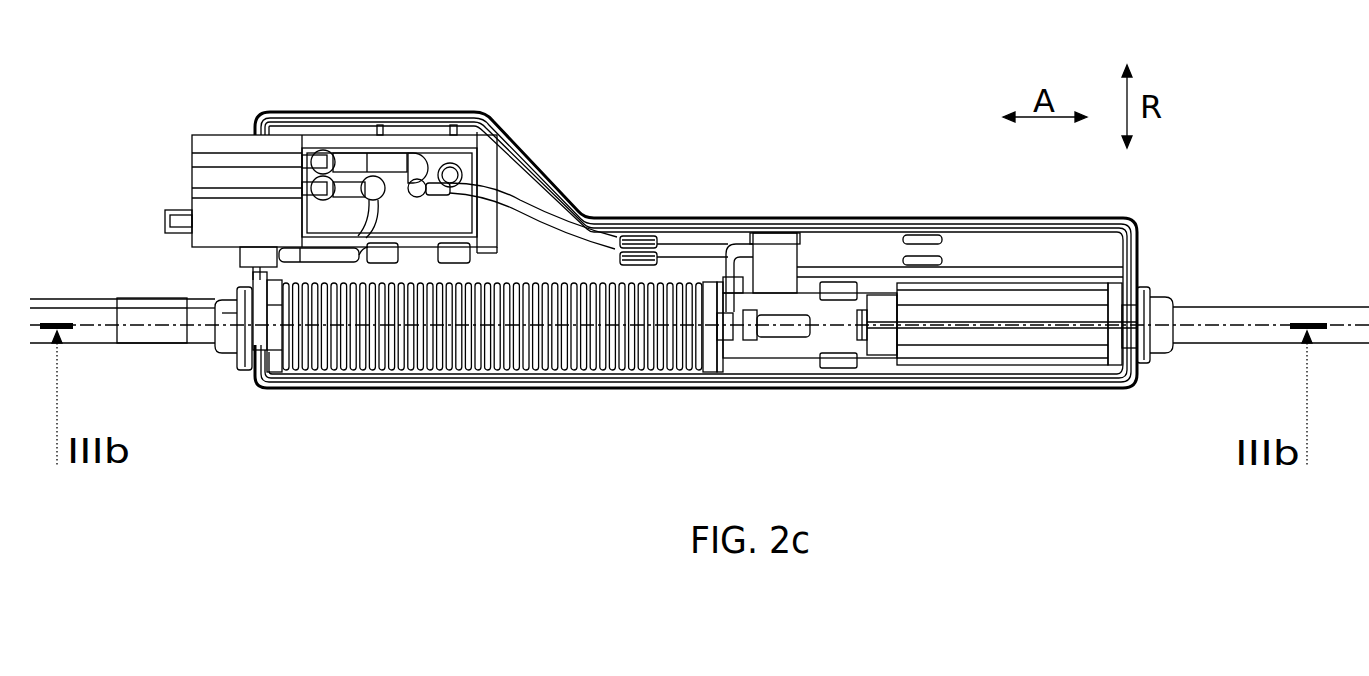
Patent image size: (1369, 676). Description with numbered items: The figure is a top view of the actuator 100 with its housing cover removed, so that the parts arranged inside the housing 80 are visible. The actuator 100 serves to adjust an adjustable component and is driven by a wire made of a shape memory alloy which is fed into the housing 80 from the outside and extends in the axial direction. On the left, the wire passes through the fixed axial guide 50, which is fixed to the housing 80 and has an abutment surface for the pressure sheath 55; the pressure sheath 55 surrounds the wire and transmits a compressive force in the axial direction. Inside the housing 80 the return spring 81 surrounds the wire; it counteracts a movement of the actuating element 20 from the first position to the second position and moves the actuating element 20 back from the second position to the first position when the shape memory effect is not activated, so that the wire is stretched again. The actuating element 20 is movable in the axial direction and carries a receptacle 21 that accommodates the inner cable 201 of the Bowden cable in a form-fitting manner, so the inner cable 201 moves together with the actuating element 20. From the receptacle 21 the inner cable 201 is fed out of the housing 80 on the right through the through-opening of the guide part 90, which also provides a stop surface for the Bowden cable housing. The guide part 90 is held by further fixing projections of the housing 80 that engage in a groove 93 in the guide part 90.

The actuator 100 is at (697, 156).
The housing 80 is at (941, 206).
The return spring 81 is at (496, 352).
The axial guide 50 is at (242, 378).
The pressure sheath 55 is at (100, 338).
The actuating element 20 is at (856, 300).
The receptacle 21 is at (863, 341).
The inner cable 201 is at (967, 327).
The guide part 90 is at (1167, 287).
The groove 93 is at (1133, 353).